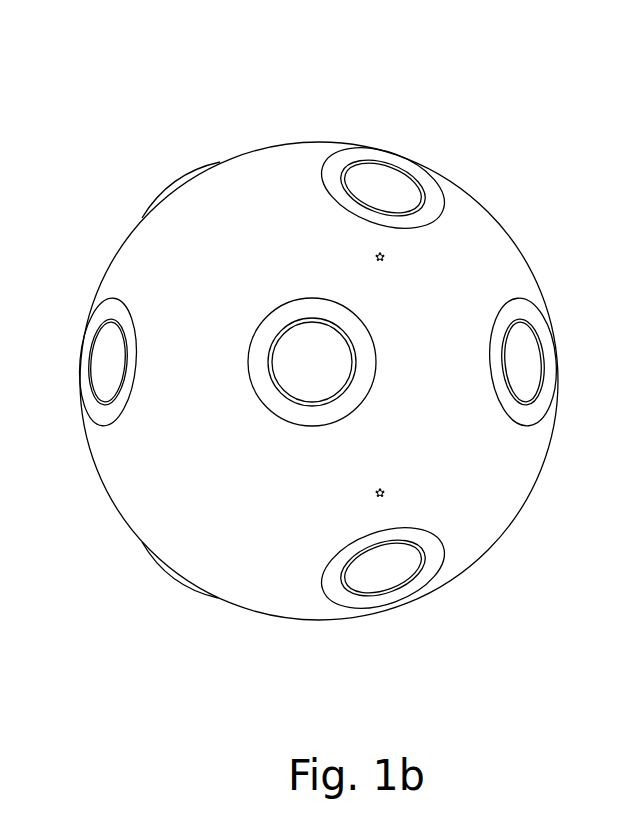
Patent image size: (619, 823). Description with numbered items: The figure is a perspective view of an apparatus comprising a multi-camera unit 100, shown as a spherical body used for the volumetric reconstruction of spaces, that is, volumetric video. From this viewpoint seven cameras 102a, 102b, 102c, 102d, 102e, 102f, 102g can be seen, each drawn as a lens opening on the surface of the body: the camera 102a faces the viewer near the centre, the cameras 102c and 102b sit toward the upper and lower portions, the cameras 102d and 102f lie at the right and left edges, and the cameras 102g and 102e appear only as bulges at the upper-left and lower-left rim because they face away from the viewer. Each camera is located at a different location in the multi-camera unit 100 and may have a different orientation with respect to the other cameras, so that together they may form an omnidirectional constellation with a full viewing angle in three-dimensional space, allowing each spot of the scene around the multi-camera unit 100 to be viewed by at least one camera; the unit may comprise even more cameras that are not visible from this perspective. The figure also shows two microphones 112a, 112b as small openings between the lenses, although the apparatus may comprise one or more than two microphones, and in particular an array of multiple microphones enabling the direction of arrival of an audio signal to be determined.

The multi-camera unit 100 is at (70, 123).
The camera 102a is at (260, 322).
The camera 102b is at (336, 556).
The camera 102c is at (340, 150).
The camera 102d is at (532, 299).
The camera 102e is at (150, 568).
The camera 102f is at (93, 328).
The camera 102g is at (172, 173).
The microphone 112a is at (386, 258).
The microphone 112b is at (387, 492).